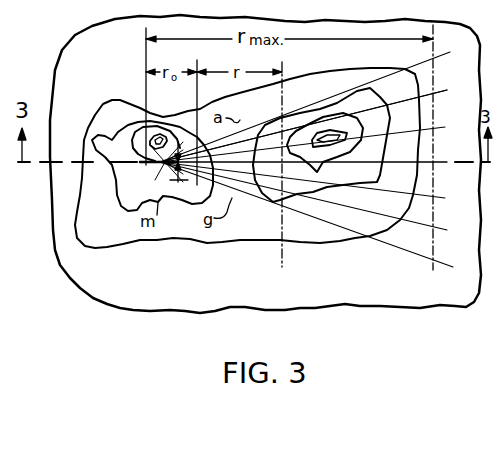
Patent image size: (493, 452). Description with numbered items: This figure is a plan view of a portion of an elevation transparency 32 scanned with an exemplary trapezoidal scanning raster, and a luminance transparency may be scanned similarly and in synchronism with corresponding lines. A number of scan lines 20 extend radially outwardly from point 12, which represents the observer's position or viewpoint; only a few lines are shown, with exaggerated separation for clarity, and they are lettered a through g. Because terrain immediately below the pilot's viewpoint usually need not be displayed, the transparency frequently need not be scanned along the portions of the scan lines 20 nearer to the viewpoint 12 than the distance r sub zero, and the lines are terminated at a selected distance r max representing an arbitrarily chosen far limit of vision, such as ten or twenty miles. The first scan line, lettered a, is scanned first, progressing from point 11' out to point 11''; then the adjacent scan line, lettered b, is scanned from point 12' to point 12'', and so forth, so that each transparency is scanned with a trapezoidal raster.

The starting point of scan line 20a 11' is at (213, 122).
The starting point of scan line 20b 12' is at (166, 96).
The end point of scan line 20a 11'' is at (457, 147).
The end point of scan line 20b 12'' is at (315, 126).
The viewpoint 12 is at (149, 155).
The scan lines 20 is at (237, 122).
The elevation transparency 32 is at (362, 286).